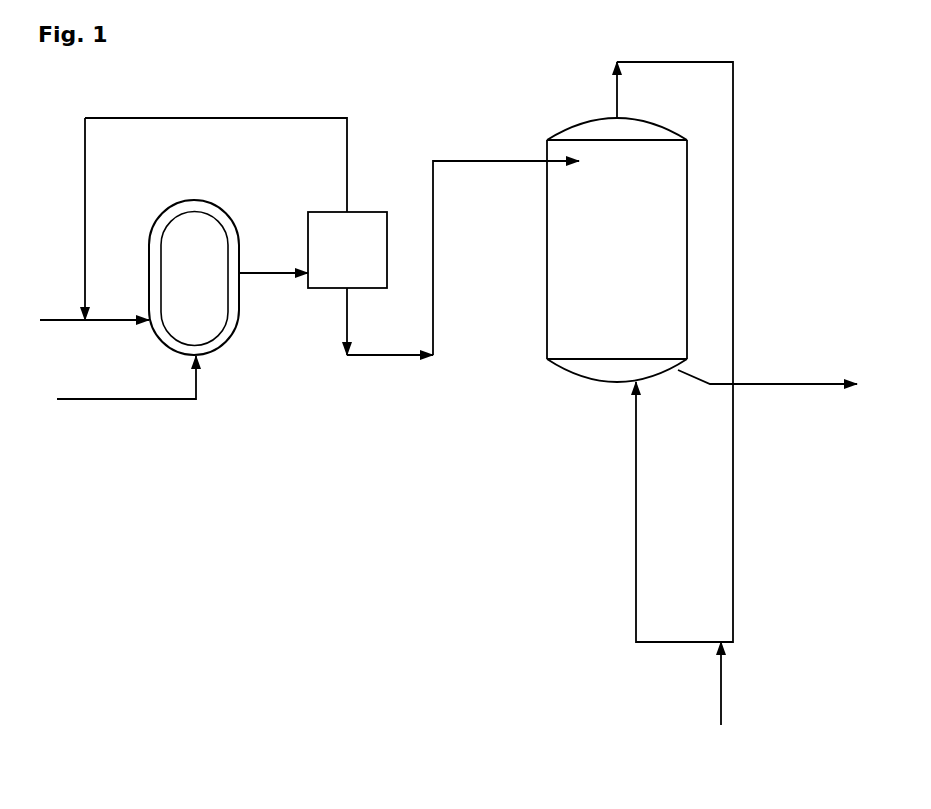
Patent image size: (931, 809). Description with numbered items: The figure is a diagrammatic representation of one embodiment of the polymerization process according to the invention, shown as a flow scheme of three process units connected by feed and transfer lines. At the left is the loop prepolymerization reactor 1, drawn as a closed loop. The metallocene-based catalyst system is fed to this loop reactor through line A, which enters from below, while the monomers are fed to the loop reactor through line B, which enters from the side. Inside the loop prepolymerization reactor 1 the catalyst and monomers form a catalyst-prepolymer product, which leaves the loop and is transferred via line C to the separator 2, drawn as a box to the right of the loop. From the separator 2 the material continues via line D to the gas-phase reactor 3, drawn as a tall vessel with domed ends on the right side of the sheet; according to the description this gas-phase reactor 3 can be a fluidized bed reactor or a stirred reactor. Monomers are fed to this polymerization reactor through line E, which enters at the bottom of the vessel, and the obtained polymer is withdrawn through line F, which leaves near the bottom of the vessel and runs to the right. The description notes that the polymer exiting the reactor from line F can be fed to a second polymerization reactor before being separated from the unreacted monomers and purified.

The loop prepolymerization reactor 1 is at (215, 221).
The separator 2 is at (387, 225).
The gas-phase reactor 3 is at (687, 243).
The line A is at (130, 399).
The line B is at (105, 320).
The line C is at (275, 273).
The line D is at (462, 161).
The line E is at (721, 690).
The line F is at (782, 384).